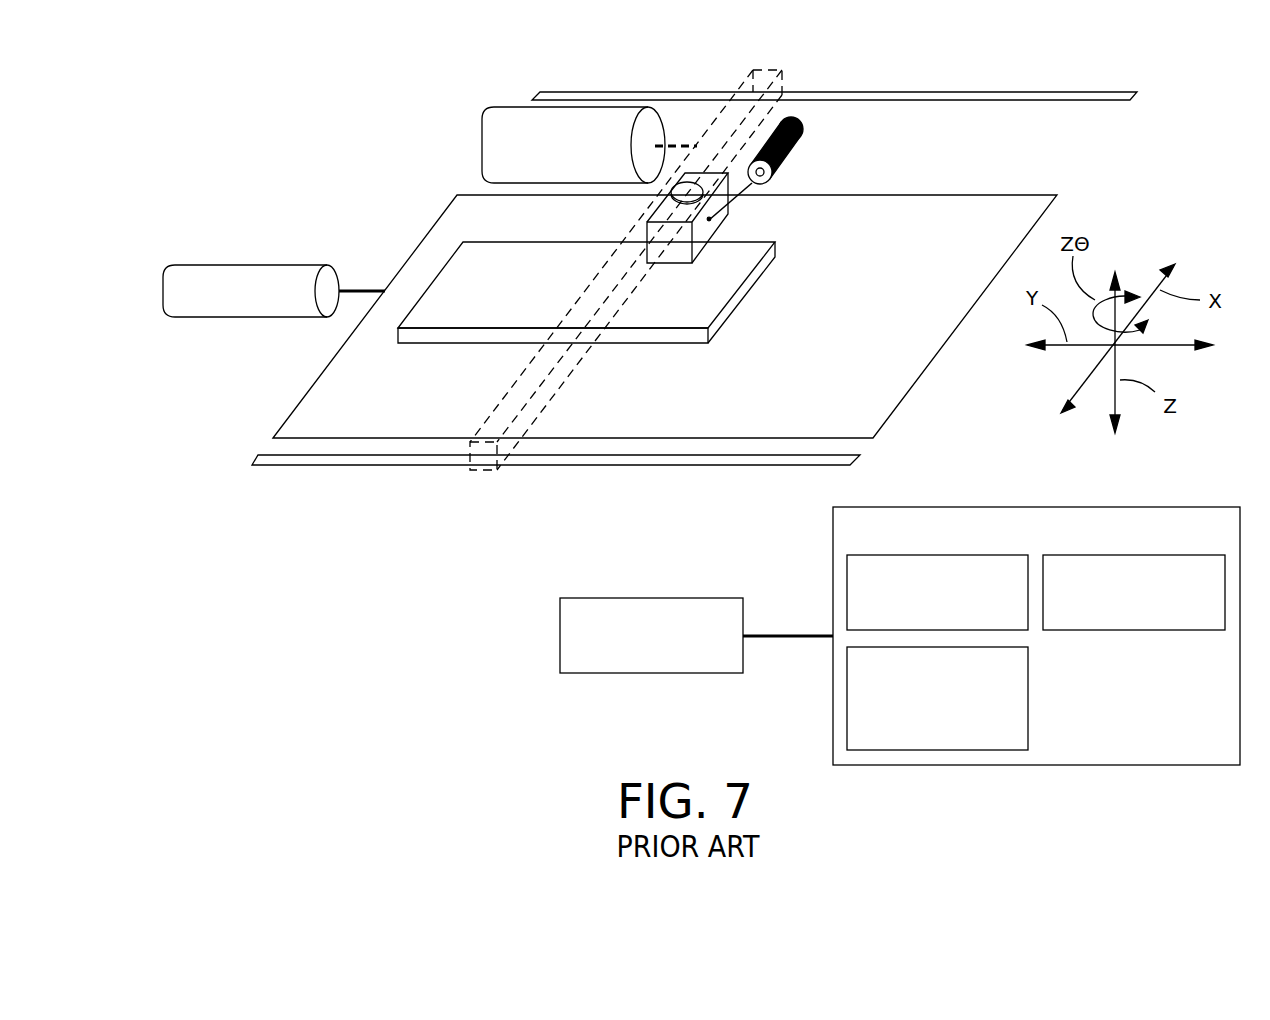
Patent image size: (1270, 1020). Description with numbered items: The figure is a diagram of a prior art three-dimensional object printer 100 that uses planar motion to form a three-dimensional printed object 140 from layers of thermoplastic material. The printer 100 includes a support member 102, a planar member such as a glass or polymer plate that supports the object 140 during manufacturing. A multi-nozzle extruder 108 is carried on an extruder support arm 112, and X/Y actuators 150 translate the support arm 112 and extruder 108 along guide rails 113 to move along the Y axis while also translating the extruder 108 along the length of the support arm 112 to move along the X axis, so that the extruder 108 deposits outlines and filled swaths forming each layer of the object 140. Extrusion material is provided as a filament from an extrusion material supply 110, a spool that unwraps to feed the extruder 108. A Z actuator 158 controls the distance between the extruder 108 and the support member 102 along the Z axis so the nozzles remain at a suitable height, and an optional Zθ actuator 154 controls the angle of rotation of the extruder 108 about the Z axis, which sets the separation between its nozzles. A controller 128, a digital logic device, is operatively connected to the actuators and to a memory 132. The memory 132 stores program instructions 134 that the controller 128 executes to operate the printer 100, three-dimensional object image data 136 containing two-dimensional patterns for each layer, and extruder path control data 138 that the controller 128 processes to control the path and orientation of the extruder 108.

The three-dimensional object printer 100 is at (352, 72).
The support member 102 is at (917, 382).
The extruder 108 is at (713, 220).
The extrusion material supply 110 is at (800, 131).
The extruder support arm 112 is at (752, 68).
The guide rails 113 is at (893, 91).
The controller 128 is at (560, 635).
The memory 132 is at (1023, 506).
The program instructions 134 is at (847, 588).
The 3D object image data 136 is at (1135, 632).
The extruder path control data 138 is at (1028, 697).
The three-dimensional printed object 140 is at (675, 347).
The X/Y actuators 150 is at (480, 146).
The Zθ actuator 154 is at (668, 193).
The Z actuator 158 is at (250, 265).